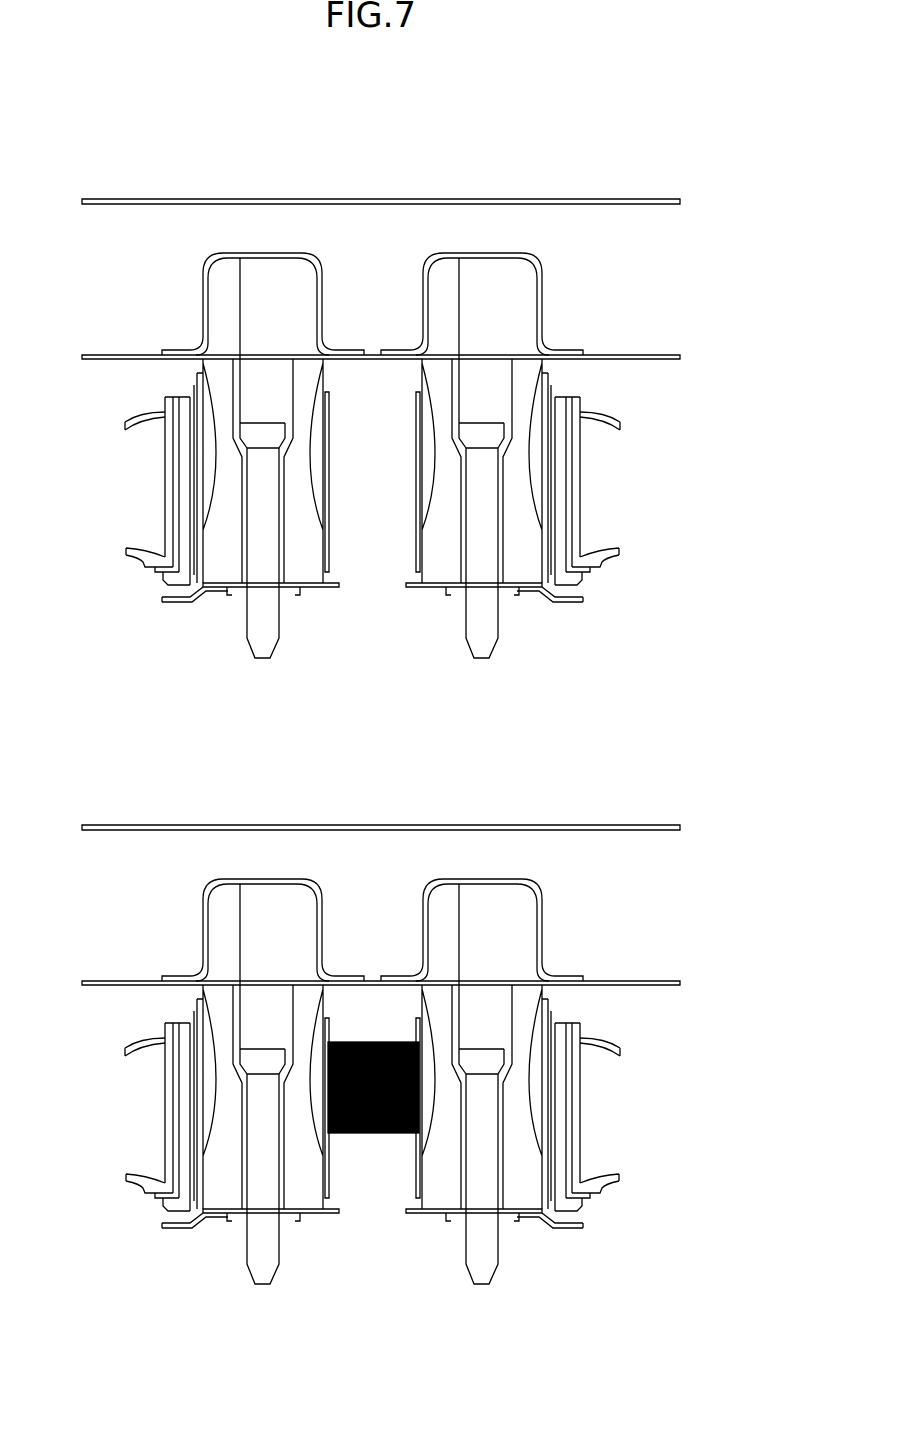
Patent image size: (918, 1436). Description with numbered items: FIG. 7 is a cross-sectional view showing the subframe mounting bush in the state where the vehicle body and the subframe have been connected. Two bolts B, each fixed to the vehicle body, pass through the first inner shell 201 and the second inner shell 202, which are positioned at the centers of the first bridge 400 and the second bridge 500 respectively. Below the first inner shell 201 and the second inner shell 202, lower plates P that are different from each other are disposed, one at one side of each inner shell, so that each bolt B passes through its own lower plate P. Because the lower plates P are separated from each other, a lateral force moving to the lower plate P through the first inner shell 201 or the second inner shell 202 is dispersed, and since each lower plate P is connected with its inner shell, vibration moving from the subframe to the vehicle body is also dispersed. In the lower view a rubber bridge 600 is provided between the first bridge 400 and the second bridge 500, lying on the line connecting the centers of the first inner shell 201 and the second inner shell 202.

The first bridge 400 is at (203, 423).
The second bridge 500 is at (542, 423).
The first inner shell 201 is at (222, 525).
The second inner shell 202 is at (523, 525).
The bolt B is at (490, 295).
The lower plate P is at (217, 588).
The rubber bridge 600 is at (388, 1092).